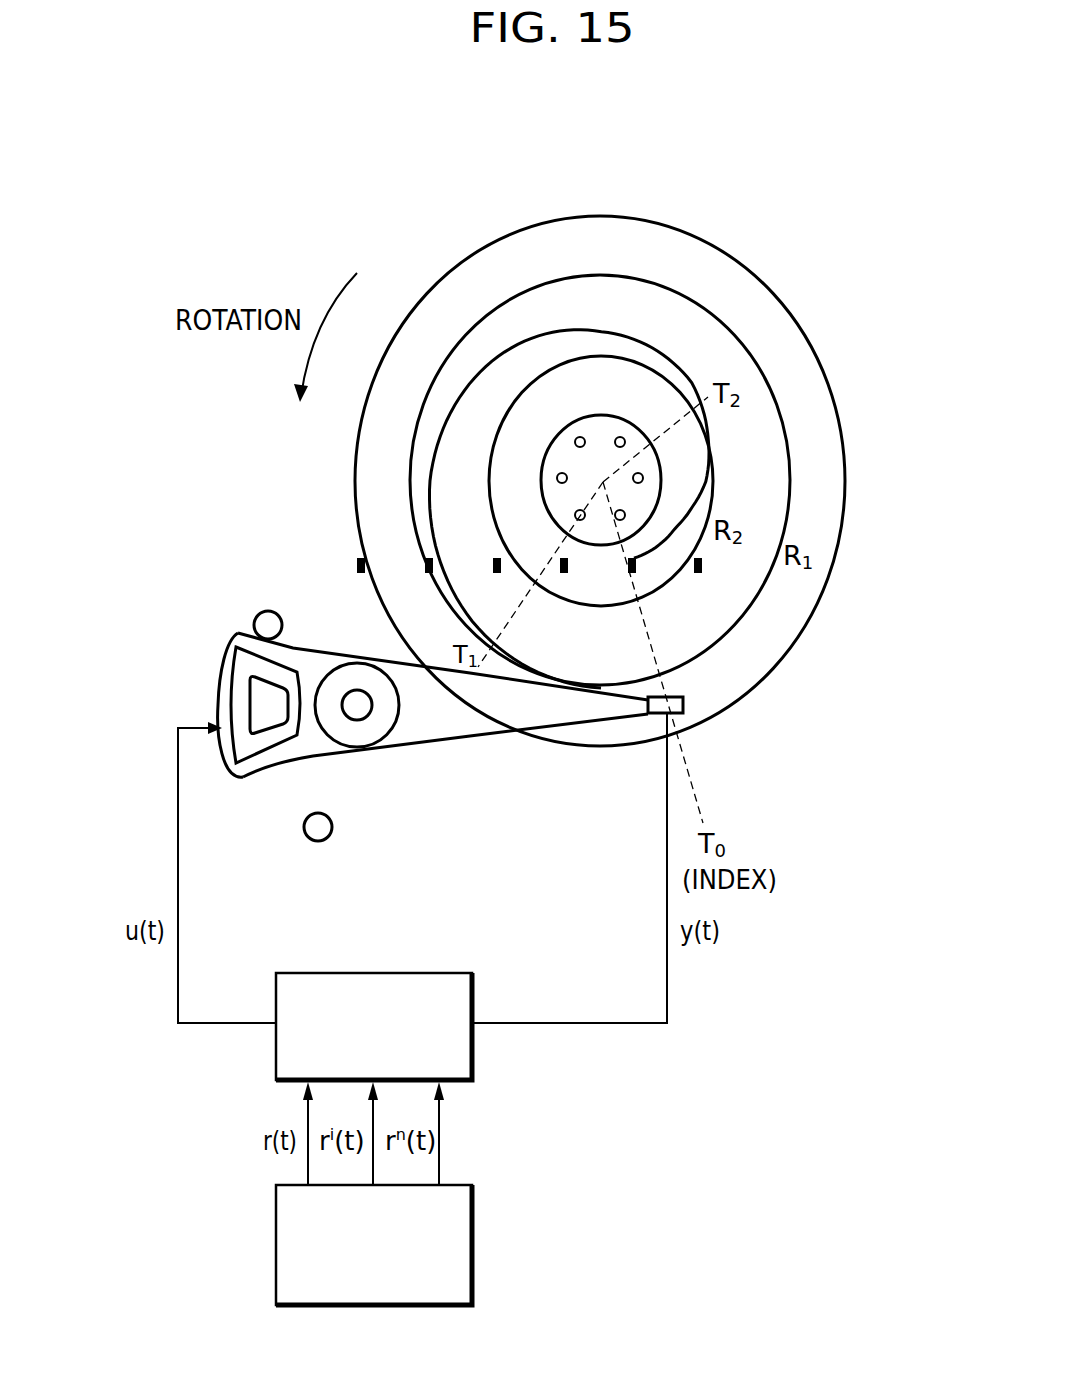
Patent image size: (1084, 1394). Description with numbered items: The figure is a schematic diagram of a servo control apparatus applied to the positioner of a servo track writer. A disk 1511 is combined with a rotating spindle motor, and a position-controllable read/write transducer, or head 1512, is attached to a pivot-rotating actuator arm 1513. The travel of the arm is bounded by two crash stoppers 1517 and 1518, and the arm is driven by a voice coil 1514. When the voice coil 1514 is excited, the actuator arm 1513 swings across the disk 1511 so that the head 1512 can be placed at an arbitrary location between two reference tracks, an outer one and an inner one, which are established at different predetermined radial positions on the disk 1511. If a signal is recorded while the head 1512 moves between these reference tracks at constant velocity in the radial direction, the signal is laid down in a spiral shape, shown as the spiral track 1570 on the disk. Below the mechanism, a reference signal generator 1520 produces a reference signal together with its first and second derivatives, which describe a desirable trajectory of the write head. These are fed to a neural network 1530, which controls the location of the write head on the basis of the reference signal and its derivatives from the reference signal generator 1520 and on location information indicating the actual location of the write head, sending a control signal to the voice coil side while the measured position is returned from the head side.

The disk 1511 is at (790, 655).
The read/write transducer (head) 1512 is at (657, 718).
The actuator arm 1513 is at (492, 712).
The voice coil 1514 is at (238, 707).
The crash stopper 1517 is at (283, 615).
The crash stopper 1518 is at (302, 837).
The reference signal generator 1520 is at (472, 1237).
The neural network 1530 is at (407, 972).
The spiral-shaped recorded signal 1570 is at (642, 345).